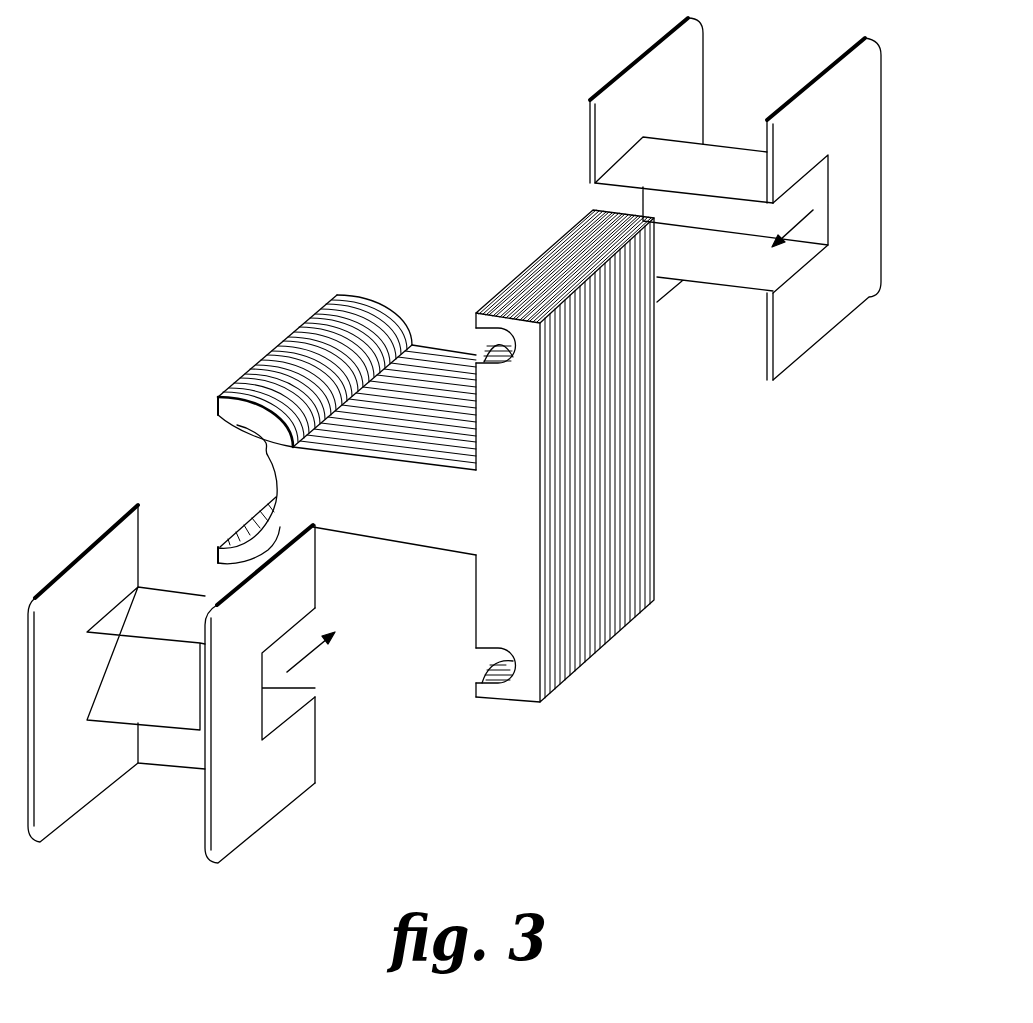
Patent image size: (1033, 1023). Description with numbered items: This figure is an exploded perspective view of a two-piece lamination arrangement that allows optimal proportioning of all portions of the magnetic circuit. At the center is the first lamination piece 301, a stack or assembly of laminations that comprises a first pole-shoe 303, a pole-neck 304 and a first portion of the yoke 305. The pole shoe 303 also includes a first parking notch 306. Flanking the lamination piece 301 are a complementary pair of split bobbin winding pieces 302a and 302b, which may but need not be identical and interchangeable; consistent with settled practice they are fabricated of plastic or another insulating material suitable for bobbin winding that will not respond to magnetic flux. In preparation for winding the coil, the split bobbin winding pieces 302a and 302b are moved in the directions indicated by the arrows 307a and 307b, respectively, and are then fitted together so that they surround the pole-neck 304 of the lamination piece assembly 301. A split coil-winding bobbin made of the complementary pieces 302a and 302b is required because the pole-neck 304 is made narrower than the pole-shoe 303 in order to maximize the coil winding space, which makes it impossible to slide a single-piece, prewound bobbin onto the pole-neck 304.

The first lamination piece 301 is at (640, 522).
The split bobbin winding piece 302a is at (273, 800).
The split bobbin winding piece 302b is at (788, 343).
The first pole-shoe 303 is at (272, 483).
The pole-neck 304 is at (417, 526).
The first portion of the yoke 305 is at (520, 588).
The first parking notch 306 is at (237, 420).
The arrow 307a is at (287, 672).
The arrow 307b is at (800, 224).